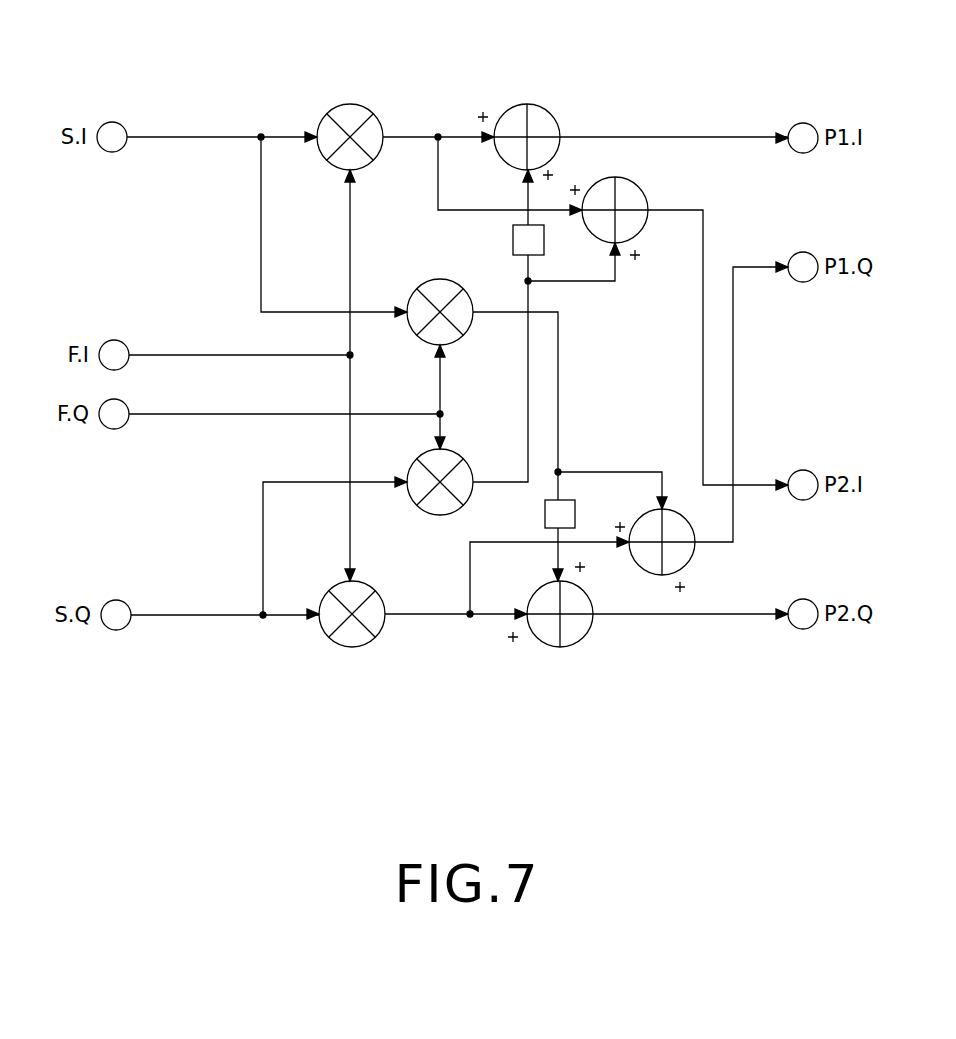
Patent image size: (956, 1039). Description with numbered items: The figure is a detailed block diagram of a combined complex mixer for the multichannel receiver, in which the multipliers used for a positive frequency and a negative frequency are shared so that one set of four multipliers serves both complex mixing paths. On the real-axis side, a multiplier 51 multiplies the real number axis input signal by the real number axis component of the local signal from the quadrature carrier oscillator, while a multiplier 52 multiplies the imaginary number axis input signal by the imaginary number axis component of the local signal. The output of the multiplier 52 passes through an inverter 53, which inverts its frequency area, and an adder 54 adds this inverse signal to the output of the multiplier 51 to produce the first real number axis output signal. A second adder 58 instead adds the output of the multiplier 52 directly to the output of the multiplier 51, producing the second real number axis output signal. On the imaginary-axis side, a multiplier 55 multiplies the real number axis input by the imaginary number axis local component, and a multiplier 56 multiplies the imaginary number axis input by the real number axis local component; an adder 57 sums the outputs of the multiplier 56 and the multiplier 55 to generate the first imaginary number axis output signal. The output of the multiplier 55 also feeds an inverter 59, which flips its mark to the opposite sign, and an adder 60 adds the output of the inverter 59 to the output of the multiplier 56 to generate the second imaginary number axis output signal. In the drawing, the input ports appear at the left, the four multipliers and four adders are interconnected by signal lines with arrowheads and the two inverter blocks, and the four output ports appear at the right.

The multiplier 51 is at (350, 104).
The multiplier 52 is at (461, 458).
The inverter 53 is at (513, 240).
The adder 54 is at (527, 104).
The multiplier 55 is at (463, 334).
The multiplier 56 is at (352, 647).
The adder 57 is at (679, 568).
The adder 58 is at (646, 192).
The inverter 59 is at (545, 516).
The adder 60 is at (560, 648).